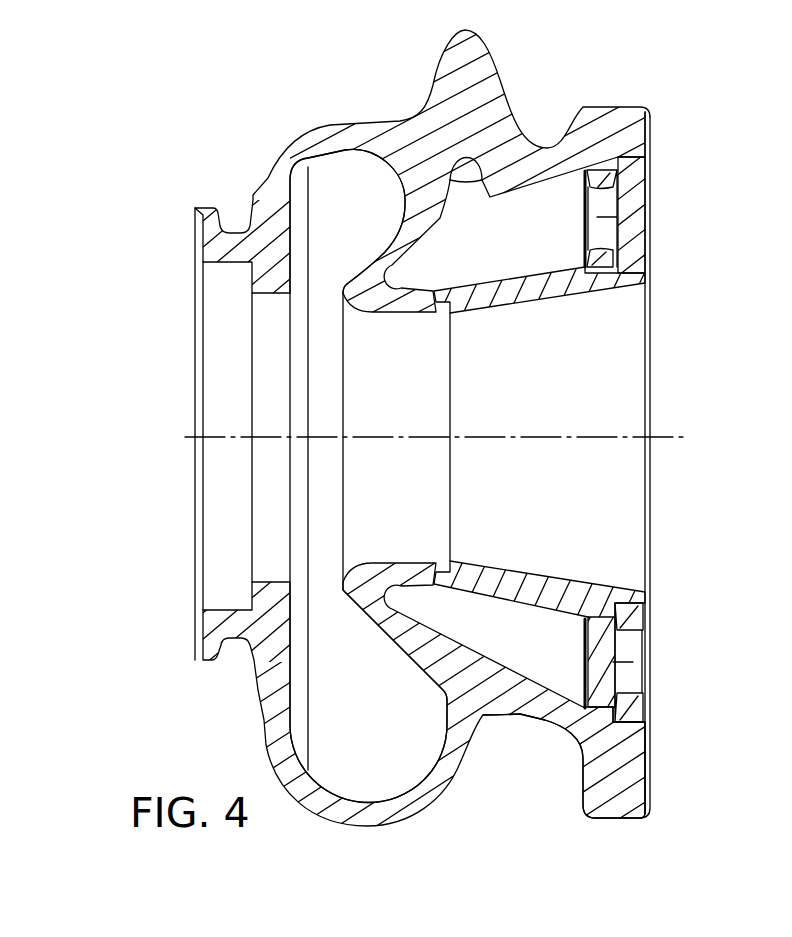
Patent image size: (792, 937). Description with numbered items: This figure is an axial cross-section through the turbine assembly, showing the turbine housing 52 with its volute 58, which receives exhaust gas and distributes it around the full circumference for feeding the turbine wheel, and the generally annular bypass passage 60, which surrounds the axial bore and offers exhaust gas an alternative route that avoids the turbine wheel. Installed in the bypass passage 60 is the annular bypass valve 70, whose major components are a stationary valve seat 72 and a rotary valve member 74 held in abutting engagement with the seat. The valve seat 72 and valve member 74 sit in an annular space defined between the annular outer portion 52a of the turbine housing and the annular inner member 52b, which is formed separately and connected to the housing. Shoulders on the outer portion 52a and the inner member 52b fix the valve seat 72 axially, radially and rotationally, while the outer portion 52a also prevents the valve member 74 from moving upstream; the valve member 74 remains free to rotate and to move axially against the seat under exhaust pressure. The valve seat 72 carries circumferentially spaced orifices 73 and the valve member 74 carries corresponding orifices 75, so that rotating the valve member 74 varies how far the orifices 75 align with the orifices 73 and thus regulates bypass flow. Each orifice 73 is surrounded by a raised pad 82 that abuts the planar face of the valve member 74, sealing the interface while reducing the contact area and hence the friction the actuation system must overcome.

The turbine housing 52 is at (495, 110).
The annular outer portion of the turbine housing 52a is at (577, 724).
The annular inner member 52b is at (588, 590).
The volute 58 is at (343, 193).
The bypass passage 60 is at (487, 610).
The annular bypass valve 70 is at (658, 184).
The valve seat 72 is at (635, 240).
The orifices of the valve seat 73 is at (622, 690).
The rotary valve member 74 is at (593, 640).
The orifices of the valve member 75 is at (583, 235).
The raised pad 82 is at (537, 603).